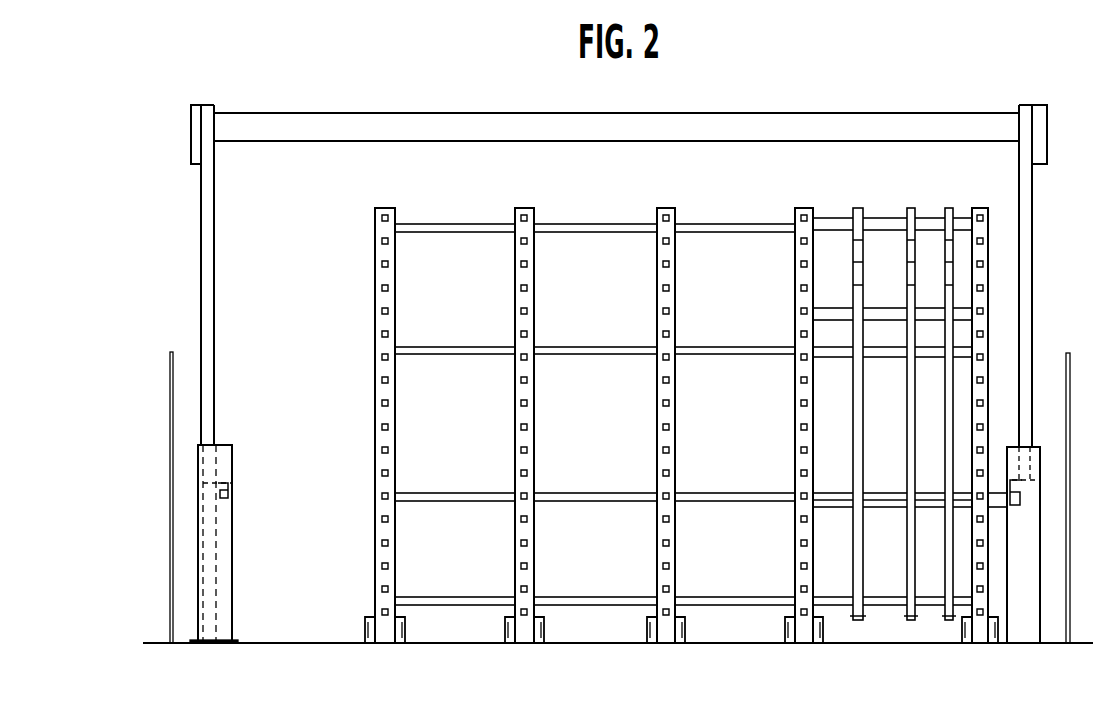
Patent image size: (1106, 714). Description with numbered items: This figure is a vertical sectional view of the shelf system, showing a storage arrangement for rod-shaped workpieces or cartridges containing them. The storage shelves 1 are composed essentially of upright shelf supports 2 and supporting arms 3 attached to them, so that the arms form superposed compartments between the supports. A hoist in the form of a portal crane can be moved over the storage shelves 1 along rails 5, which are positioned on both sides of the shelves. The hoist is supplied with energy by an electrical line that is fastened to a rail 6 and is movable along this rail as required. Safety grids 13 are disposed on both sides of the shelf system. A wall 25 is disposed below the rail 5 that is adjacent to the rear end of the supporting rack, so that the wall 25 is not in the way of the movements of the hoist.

The storage shelves 1 is at (686, 397).
The shelf supports 2 is at (525, 206).
The supporting arms 3 is at (666, 238).
The rails 5 is at (222, 488).
The rail 6 is at (1040, 136).
The safety grids 13 is at (171, 350).
The wall 25 is at (212, 548).